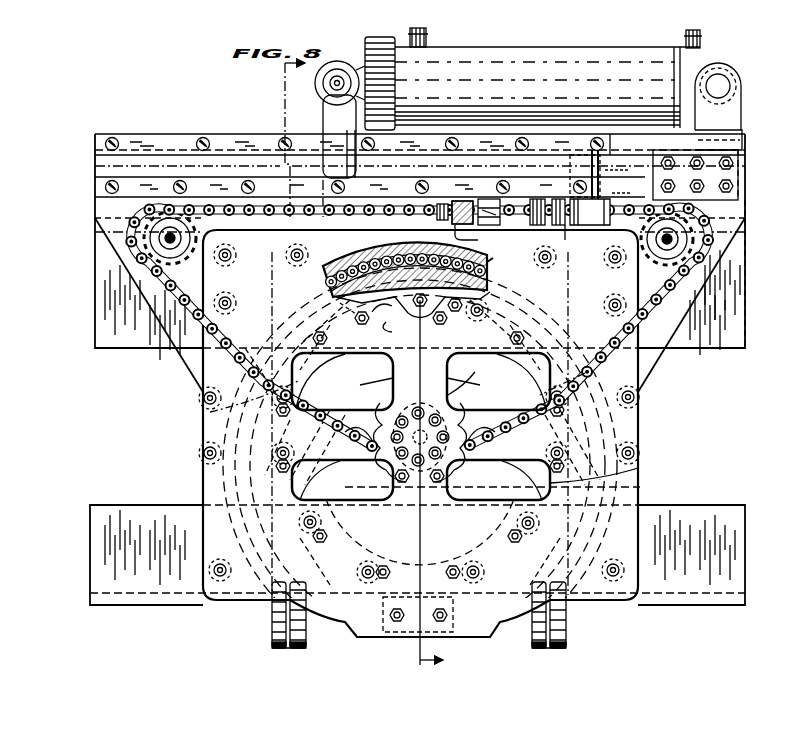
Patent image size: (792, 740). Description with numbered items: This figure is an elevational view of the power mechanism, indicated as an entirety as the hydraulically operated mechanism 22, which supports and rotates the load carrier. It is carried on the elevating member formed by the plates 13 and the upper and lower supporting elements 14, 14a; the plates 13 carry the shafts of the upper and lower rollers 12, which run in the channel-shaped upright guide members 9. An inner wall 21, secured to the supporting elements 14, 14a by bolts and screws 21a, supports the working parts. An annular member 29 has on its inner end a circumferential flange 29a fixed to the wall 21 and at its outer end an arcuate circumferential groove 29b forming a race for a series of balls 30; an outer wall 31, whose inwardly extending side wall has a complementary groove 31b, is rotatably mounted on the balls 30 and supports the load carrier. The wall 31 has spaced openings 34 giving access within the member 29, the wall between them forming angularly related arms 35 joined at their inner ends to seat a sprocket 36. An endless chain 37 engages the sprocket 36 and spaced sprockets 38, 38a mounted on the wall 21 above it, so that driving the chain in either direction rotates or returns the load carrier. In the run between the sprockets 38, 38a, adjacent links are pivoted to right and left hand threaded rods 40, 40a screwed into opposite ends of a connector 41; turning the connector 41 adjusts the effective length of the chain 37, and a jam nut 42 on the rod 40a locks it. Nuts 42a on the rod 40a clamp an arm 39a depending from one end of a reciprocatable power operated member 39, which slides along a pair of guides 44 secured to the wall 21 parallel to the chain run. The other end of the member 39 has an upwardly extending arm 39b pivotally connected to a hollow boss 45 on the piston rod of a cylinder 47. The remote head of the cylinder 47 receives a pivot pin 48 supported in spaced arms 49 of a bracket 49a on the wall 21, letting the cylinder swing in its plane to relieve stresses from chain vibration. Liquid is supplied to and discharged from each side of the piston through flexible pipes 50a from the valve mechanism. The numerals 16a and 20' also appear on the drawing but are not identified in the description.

The upright members 9 is at (370, 363).
The rollers 12 is at (288, 300).
The plate 13 is at (298, 644).
The upper supporting element 14 is at (108, 345).
The lower supporting element 14a is at (92, 572).
The ring gear circle 16a is at (492, 527).
The pivot axis 20' is at (390, 393).
The inner wall 21 is at (195, 365).
The bolts and screws 21a is at (518, 306).
The hydraulically operated mechanism 22 is at (684, 395).
The annular member 29 is at (638, 487).
The circumferential flange 29a is at (413, 319).
The circumferential groove 29b is at (348, 305).
The balls 30 is at (342, 264).
The outer member or wall 31 is at (203, 476).
The circumferential groove 31b is at (494, 268).
The openings 34 is at (352, 434).
The arms 35 is at (393, 378).
The sprocket 36 is at (461, 381).
The endless chain 37 is at (192, 298).
The sprocket 38 is at (172, 262).
The sprocket 38a is at (652, 280).
The power operated member 39 is at (600, 160).
The arm 39a is at (630, 161).
The upwardly extending arm 39b is at (324, 114).
The right hand threaded rod 40 is at (477, 237).
The left hand threaded rod 40a is at (612, 193).
The connector 41 is at (472, 186).
The jam nut 42 is at (534, 198).
The nuts 42a is at (565, 240).
The guides 44 is at (190, 124).
The hollow boss 45 is at (352, 70).
The cylinder 47 is at (590, 44).
The pivot pin 48 is at (718, 74).
The arms 49 is at (736, 112).
The bracket 49a is at (738, 178).
The flexible pipe 50a is at (426, 34).